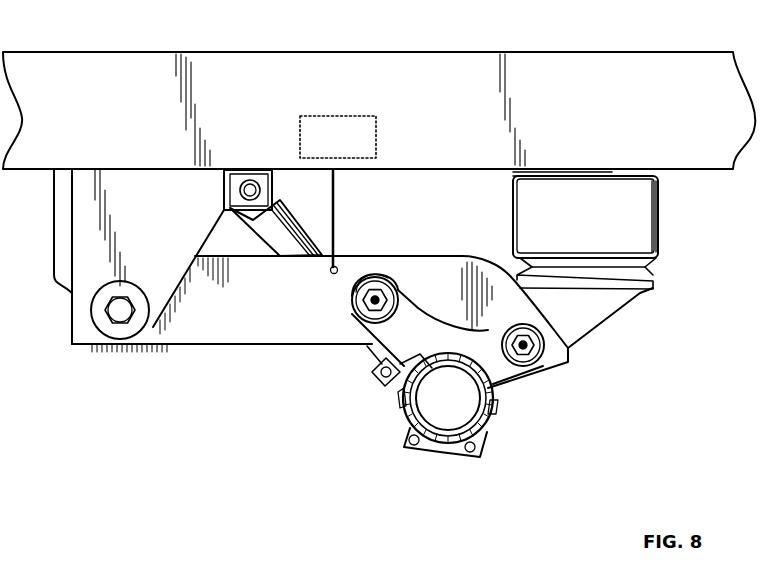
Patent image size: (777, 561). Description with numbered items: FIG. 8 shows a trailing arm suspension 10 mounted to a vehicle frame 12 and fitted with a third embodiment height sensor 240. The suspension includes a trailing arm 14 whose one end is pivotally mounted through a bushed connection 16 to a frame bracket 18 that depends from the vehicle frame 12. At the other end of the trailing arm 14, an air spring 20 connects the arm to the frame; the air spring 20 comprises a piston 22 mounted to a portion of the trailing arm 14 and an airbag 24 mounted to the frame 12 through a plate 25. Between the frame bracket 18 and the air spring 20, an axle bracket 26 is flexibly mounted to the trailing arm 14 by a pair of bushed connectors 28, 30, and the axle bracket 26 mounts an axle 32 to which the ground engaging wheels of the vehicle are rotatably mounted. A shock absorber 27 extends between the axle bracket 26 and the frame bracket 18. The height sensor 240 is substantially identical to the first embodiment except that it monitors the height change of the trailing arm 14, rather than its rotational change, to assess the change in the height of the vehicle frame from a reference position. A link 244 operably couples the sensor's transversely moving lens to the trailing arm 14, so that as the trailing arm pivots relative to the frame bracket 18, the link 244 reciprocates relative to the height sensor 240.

The trailing arm suspension 10 is at (645, 345).
The vehicle frame 12 is at (627, 70).
The trailing arm 14 is at (230, 346).
The bushed connection 16 is at (112, 322).
The frame bracket 18 is at (78, 316).
The air spring 20 is at (666, 215).
The piston 22 is at (641, 284).
The airbag 24 is at (658, 243).
The plate 25 is at (613, 172).
The axle bracket 26 is at (417, 308).
The shock absorber 27 is at (300, 203).
The bushed connector 28 is at (371, 303).
The bushed connector 30 is at (523, 349).
The axle 32 is at (430, 398).
The height sensor 240 is at (337, 115).
The link 244 is at (338, 192).